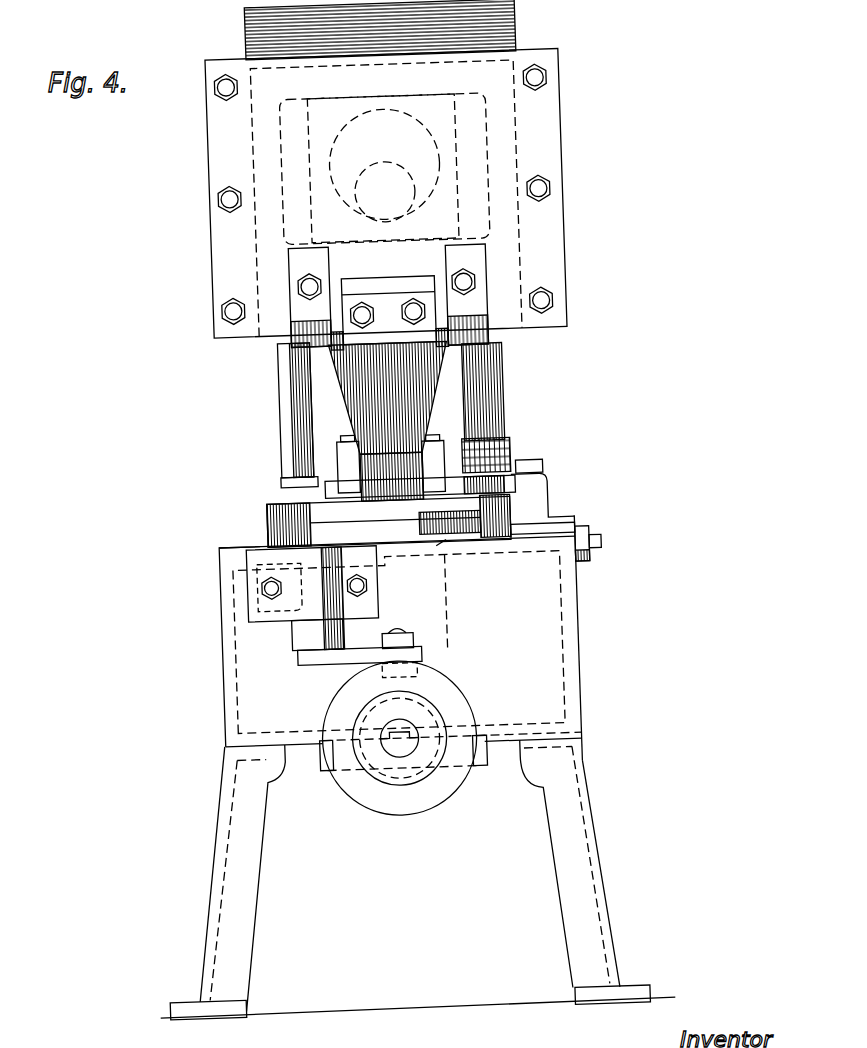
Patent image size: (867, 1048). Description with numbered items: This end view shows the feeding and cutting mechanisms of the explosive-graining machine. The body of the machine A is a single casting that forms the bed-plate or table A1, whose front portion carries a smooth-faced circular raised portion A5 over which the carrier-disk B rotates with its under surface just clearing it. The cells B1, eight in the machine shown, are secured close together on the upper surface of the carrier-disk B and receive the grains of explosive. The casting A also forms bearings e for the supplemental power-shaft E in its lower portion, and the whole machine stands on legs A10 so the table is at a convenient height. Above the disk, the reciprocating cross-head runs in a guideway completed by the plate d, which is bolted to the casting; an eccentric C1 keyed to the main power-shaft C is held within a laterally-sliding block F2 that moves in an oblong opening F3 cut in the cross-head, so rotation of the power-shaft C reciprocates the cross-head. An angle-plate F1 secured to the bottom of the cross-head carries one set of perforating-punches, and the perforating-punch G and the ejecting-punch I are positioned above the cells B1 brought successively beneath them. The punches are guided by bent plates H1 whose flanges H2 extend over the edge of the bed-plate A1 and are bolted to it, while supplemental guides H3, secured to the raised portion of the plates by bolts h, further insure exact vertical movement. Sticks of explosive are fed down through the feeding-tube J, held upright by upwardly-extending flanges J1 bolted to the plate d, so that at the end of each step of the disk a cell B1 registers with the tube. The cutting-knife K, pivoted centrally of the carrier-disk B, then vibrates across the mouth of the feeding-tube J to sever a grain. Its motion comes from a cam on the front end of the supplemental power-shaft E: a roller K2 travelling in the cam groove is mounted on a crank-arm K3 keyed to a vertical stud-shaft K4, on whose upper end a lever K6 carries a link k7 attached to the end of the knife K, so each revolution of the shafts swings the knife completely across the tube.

The angle-plate F1 is at (261, 26).
The plate d is at (571, 136).
The laterally-sliding block F2 is at (383, 168).
The oblong opening F3 is at (306, 163).
The eccentric C1 is at (385, 165).
The power-shaft C is at (385, 192).
The upwardly-extending flanges J1 is at (362, 255).
The ejecting-punch I is at (282, 411).
The lever K6 is at (295, 479).
The feeding-tube J is at (364, 416).
The perforating-punch G is at (506, 390).
The bolts h is at (447, 446).
The supplemental guides H3 is at (514, 442).
The bent plates H1 is at (545, 483).
The cutting-knife K is at (469, 491).
The carrier-disk B is at (400, 532).
The cells B1 is at (271, 509).
The link k7 is at (433, 554).
The flanges H2 is at (596, 519).
The body of the machine A is at (378, 644).
The bed-plate or table A1 is at (240, 541).
The circular raised portion A5 is at (513, 545).
The vertical stud-shaft K4 is at (304, 637).
The crank-arm K3 is at (338, 659).
The roller K2 is at (410, 660).
The supplemental power-shaft E is at (452, 742).
The bearings e is at (478, 769).
The legs A10 is at (242, 870).